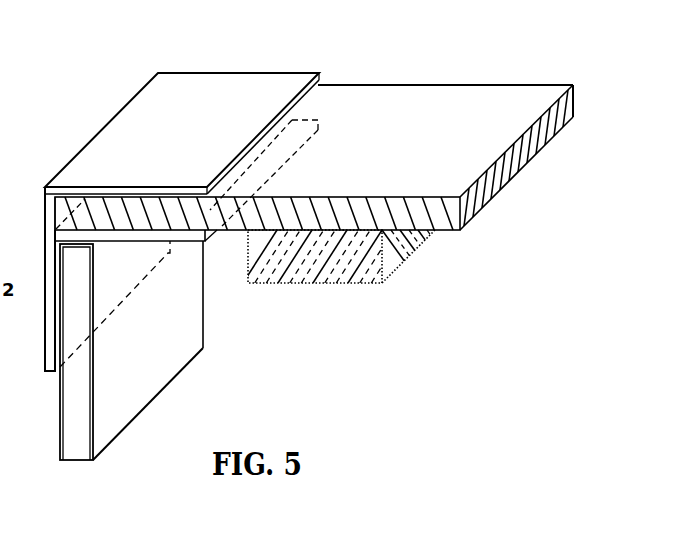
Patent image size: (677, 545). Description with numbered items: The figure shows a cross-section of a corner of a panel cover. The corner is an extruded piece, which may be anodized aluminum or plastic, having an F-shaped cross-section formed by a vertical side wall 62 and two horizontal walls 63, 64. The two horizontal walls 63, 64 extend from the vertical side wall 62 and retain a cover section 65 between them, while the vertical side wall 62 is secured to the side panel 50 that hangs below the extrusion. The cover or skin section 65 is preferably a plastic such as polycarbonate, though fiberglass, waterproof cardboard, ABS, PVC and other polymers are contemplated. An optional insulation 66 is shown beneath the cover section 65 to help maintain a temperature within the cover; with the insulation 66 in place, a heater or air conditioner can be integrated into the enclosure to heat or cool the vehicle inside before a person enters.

The side panel 50 is at (165, 385).
The vertical side wall 62 is at (44, 324).
The horizontal wall 63 is at (247, 73).
The horizontal wall 64 is at (183, 242).
The cover section 65 is at (385, 85).
The insulation 66 is at (339, 269).